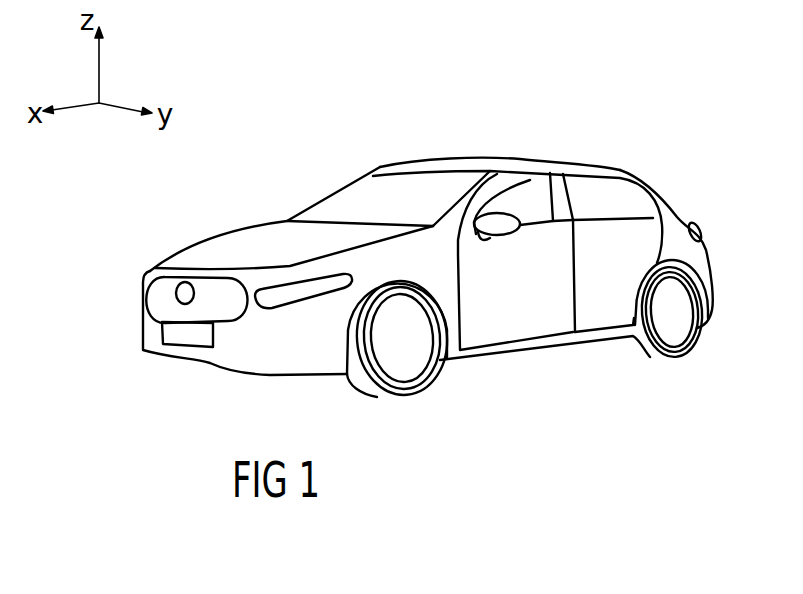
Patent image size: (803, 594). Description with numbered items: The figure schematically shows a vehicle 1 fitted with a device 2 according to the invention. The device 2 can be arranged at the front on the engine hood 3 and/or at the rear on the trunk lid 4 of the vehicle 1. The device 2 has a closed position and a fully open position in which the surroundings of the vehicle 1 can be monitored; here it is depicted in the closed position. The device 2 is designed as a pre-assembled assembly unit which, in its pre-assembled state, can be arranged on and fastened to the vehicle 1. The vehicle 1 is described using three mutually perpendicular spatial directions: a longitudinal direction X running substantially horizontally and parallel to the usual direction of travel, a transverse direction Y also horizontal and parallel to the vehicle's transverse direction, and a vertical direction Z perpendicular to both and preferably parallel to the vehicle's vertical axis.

The vehicle 1 is at (542, 136).
The device 2 is at (175, 289).
The engine hood 3 is at (235, 248).
The trunk lid 4 is at (670, 183).